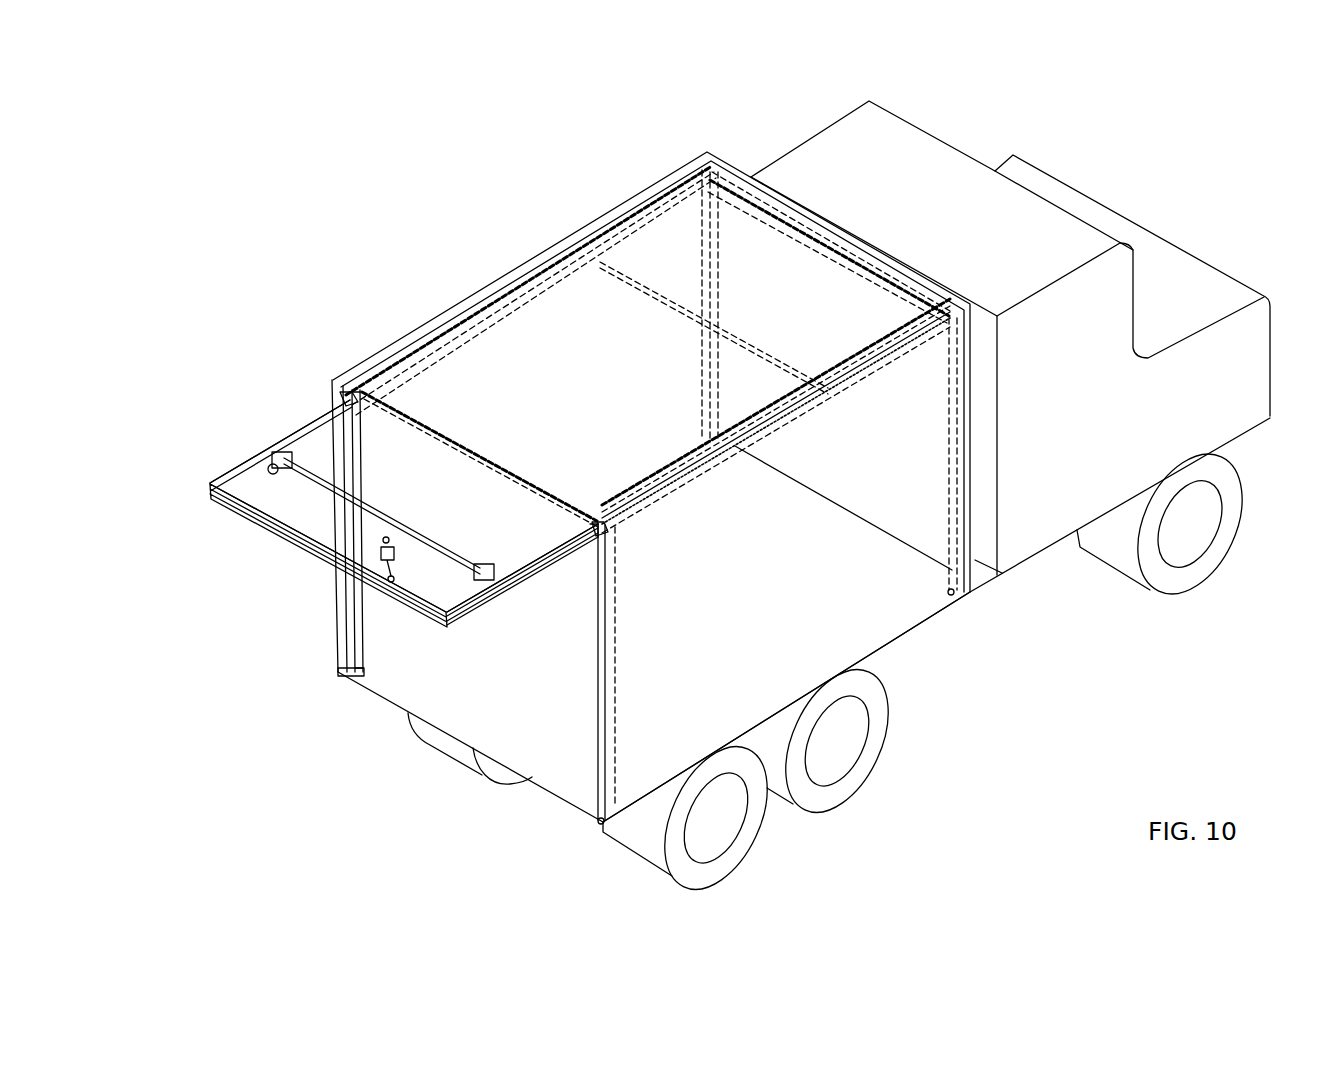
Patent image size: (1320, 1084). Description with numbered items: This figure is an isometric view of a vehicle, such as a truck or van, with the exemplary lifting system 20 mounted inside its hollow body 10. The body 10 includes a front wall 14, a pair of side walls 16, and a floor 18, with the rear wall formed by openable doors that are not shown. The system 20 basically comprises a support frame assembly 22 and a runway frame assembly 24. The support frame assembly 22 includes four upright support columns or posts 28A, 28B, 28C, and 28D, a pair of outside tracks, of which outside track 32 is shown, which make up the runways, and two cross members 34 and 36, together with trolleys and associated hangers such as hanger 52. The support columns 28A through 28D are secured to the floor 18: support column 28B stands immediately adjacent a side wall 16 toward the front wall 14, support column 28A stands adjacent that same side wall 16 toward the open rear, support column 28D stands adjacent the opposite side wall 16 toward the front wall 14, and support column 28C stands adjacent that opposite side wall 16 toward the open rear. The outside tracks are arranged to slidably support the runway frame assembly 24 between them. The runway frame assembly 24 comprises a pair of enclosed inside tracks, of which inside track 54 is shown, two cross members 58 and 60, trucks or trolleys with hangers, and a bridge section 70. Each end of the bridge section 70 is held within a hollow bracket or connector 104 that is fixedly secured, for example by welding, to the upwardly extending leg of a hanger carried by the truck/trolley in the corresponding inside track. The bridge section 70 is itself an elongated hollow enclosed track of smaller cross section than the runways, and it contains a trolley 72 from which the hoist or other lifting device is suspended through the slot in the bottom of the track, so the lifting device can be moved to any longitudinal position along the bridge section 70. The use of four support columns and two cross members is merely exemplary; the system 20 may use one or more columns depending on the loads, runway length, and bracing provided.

The body 10 is at (915, 612).
The front wall 14 is at (915, 458).
The side wall 16 is at (382, 623).
The floor 18 is at (485, 713).
The system 20 is at (573, 535).
The support frame assembly 22 is at (353, 597).
The runway frame assembly 24 is at (283, 437).
The support column 28A is at (600, 745).
The support column 28B is at (945, 495).
The support column 28C is at (345, 582).
The support column 28D is at (700, 395).
The outside track 32 is at (537, 272).
The cross member 34 is at (480, 450).
The cross member 36 is at (825, 250).
The hanger 52 is at (500, 580).
The inside track 54 is at (243, 462).
The cross member 58 is at (240, 507).
The cross member 60 is at (750, 340).
The bridge section 70 is at (390, 520).
The trolley 72 is at (405, 535).
The bracket or connector 104 is at (292, 460).